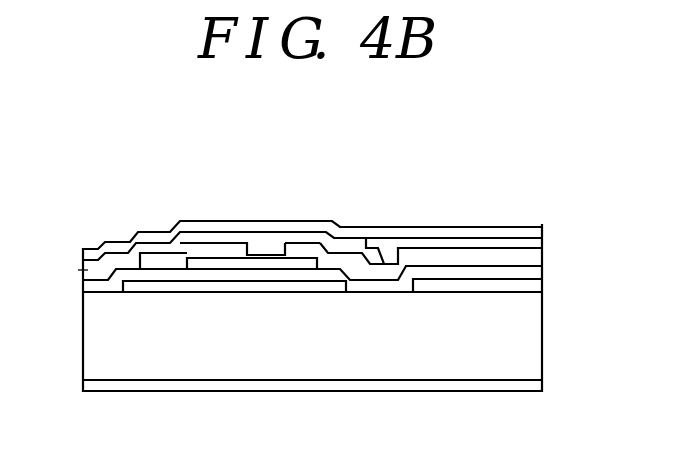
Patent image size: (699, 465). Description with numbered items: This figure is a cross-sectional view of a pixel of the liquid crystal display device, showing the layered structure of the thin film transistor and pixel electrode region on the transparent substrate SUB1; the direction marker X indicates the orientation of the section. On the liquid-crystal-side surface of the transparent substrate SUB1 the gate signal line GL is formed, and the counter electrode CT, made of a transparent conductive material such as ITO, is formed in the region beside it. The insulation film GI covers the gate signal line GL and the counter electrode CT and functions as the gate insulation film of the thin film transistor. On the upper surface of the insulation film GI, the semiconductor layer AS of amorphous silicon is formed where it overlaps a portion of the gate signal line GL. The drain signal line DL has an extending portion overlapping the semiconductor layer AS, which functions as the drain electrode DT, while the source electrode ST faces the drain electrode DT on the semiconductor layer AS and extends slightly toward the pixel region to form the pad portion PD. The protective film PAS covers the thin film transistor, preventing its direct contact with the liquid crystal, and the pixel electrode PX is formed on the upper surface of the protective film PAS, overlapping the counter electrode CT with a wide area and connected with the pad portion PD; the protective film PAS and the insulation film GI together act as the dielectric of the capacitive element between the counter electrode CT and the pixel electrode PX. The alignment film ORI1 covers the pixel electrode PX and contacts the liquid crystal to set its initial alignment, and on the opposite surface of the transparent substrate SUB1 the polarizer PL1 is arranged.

The drain signal line DL is at (153, 261).
The insulation film GI is at (137, 272).
The drain electrode DT is at (213, 249).
The semiconductor layer AS is at (263, 262).
The source electrode ST is at (314, 249).
The alignment film ORI1 is at (390, 227).
The pixel electrode PX is at (447, 242).
The protective film PAS is at (88, 271).
The section direction marker X is at (44, 287).
The transparent substrate SUB1 is at (112, 352).
The gate signal line GL is at (290, 287).
The pad portion PD is at (379, 265).
The counter electrode CT is at (457, 282).
The polarizer PL1 is at (507, 384).